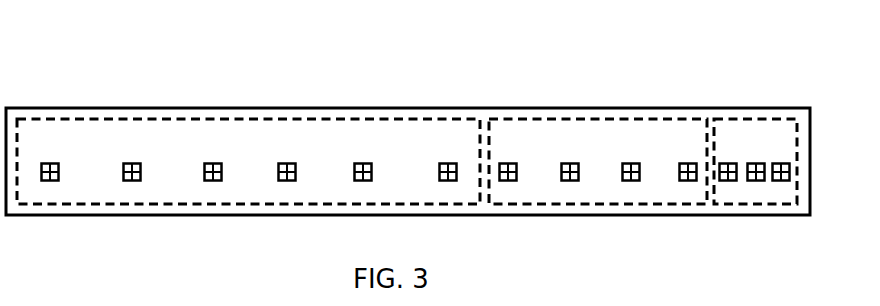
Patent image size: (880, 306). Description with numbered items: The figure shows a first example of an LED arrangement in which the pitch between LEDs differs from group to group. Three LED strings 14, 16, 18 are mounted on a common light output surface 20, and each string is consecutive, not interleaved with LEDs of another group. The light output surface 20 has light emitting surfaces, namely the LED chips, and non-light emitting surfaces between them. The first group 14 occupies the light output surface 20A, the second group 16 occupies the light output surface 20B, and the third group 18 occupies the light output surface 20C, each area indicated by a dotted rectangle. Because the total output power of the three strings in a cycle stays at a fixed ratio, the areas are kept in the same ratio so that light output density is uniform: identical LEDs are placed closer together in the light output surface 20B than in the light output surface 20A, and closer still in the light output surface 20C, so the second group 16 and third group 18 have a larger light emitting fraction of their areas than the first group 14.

The common light output surface 20 is at (128, 108).
The light output surface of the first group 20A is at (257, 118).
The light output surface of the second group 20B is at (595, 118).
The light output surface of the third group 20C is at (757, 118).
The first LED string 14 is at (39, 155).
The second LED string 16 is at (498, 155).
The third LED string 18 is at (717, 155).